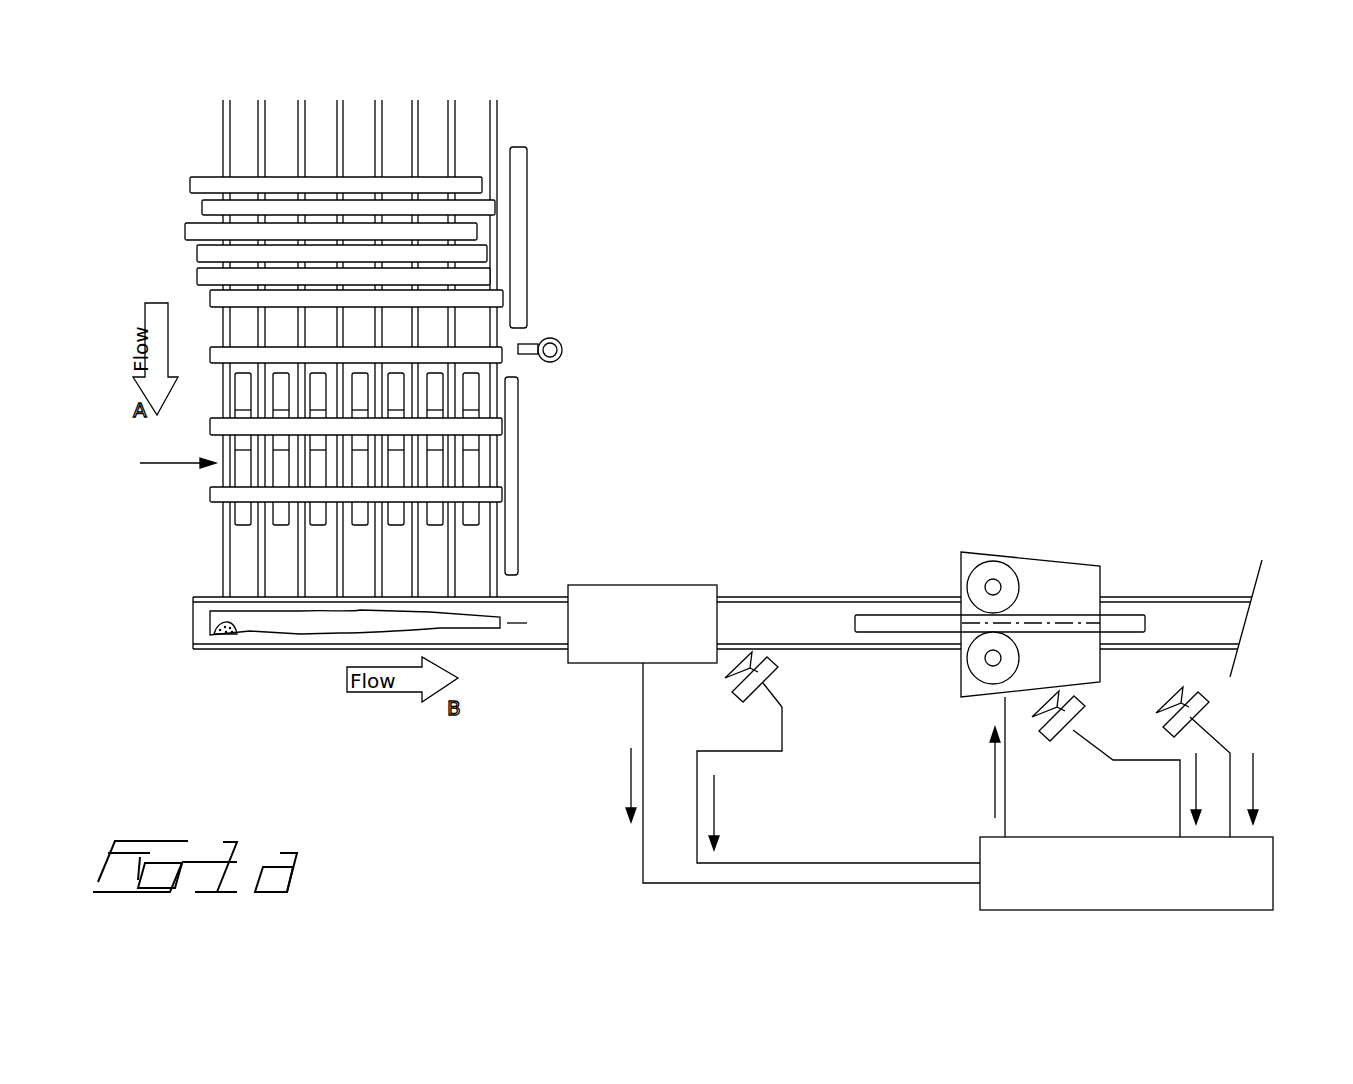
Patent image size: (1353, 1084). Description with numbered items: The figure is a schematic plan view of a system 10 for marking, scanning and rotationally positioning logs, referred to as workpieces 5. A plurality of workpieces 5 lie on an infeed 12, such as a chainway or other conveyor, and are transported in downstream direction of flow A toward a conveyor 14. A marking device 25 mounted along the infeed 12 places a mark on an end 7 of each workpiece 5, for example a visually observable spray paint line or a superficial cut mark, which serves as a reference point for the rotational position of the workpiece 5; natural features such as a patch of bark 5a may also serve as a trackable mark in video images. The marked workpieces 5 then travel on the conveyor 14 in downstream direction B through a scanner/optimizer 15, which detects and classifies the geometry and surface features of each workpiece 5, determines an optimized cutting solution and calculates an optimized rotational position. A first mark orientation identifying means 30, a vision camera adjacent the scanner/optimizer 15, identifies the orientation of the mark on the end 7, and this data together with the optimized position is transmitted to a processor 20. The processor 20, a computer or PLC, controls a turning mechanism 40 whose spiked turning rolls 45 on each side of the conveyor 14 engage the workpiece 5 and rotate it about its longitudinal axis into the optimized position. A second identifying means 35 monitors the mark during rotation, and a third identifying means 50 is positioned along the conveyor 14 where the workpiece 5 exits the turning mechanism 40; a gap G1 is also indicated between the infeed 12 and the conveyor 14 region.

The workpiece 5 is at (185, 230).
The patch of bark 5a is at (218, 637).
The end 7 is at (1147, 620).
The system 10 is at (757, 408).
The infeed 12 is at (341, 100).
The conveyor 14 is at (538, 650).
The scanner/optimizer 15 is at (643, 585).
The processor 20 is at (1067, 870).
The marking device 25 is at (556, 338).
The first mark orientation identifying means 30 is at (770, 678).
The second mark orientation identifying means 35 is at (1080, 704).
The turning mechanism 40 is at (1062, 545).
The turning rolls 45 is at (993, 561).
The third identifying means 50 is at (1205, 700).
The gap G1 is at (207, 623).